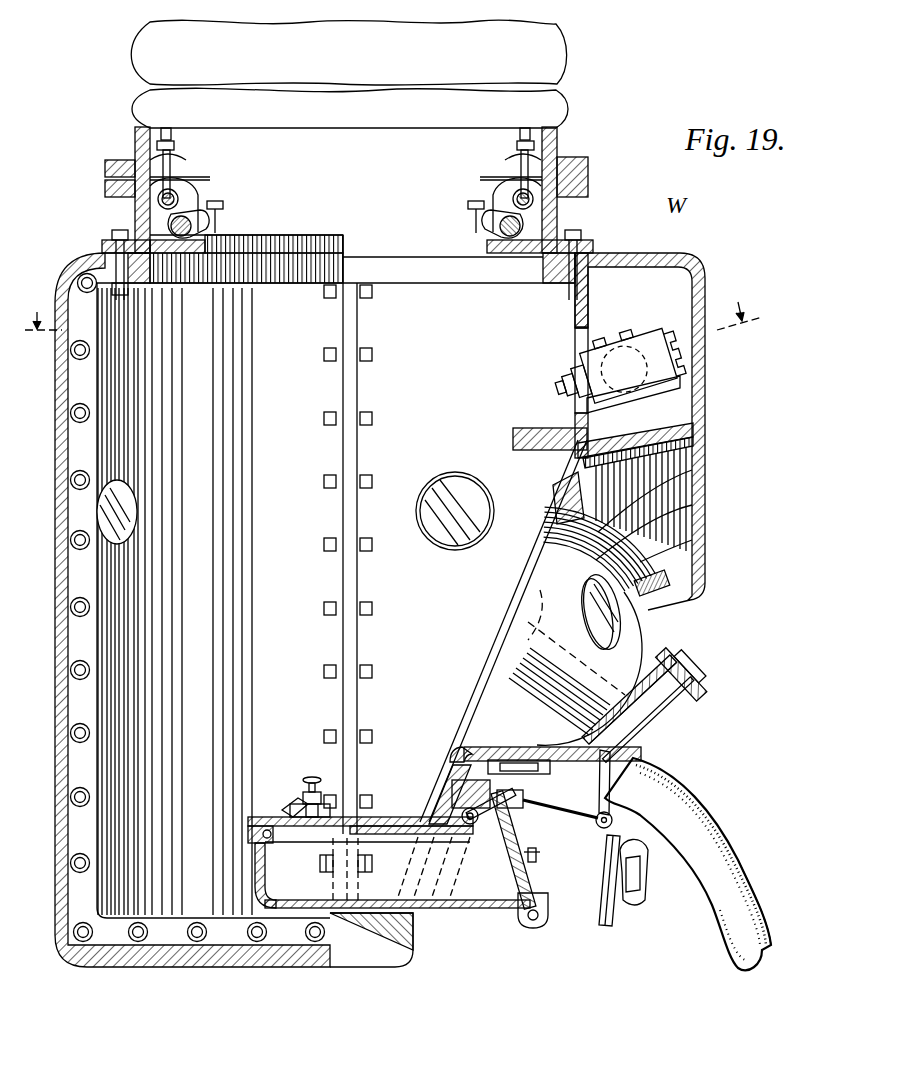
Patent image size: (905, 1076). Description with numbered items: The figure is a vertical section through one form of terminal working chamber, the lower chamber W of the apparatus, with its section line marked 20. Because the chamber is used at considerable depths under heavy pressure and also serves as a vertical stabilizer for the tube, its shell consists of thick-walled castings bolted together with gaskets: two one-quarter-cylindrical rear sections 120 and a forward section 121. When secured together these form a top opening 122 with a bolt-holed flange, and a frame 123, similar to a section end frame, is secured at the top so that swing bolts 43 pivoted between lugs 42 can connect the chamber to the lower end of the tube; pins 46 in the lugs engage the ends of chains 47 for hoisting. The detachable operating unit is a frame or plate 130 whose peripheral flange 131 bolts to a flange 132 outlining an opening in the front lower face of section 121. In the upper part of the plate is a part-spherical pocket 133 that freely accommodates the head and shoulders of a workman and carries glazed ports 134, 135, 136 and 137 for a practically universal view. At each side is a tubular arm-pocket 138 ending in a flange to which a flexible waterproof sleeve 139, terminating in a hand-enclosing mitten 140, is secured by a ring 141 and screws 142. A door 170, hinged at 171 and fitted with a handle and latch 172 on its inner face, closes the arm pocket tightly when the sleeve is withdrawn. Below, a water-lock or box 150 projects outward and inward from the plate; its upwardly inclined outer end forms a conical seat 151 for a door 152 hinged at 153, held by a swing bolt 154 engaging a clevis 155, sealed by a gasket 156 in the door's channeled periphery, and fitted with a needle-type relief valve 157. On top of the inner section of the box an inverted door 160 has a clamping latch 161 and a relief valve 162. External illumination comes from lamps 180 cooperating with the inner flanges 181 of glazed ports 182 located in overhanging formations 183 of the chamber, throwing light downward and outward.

The section line 20 is at (393, 329).
The lugs 42 is at (190, 197).
The swing bolts 43 is at (173, 163).
The pins 46 is at (225, 238).
The chains 47 is at (220, 212).
The rear sections 120 is at (199, 610).
The forward section 121 is at (456, 534).
The top opening 122 is at (277, 286).
The frame 123 is at (528, 254).
The frame or plate 130 is at (457, 770).
The peripheral flange 131 is at (593, 487).
The flange 132 is at (553, 492).
The part-spherical pocket 133 is at (552, 600).
The glazed port 134 is at (667, 727).
The glazed port 135 is at (614, 633).
The glazed port 136 is at (642, 552).
The glazed port 137 is at (522, 753).
The arm-pocket 138 is at (532, 692).
The sleeve 139 is at (740, 850).
The hose end 140 is at (735, 962).
The ring 141 is at (690, 663).
The screws 142 is at (695, 675).
The water-lock or box 150 is at (397, 873).
The seat 151 is at (517, 915).
The door 152 is at (522, 878).
The hinge 153 is at (532, 921).
The swing bolt 154 is at (458, 803).
The clevis 155 is at (510, 818).
The gasket 156 is at (493, 842).
The relief valve 157 is at (537, 853).
The door 160 is at (297, 844).
The clamping latch 161 is at (284, 810).
The relief valve 162 is at (307, 778).
The door 170 is at (600, 927).
The hinge 171 is at (598, 827).
The handle and latch 172 is at (642, 892).
The lamps 180 is at (645, 335).
The inner flanges 181 is at (670, 402).
The glazed ports 182 is at (683, 440).
The overhanging formations 183 is at (694, 257).